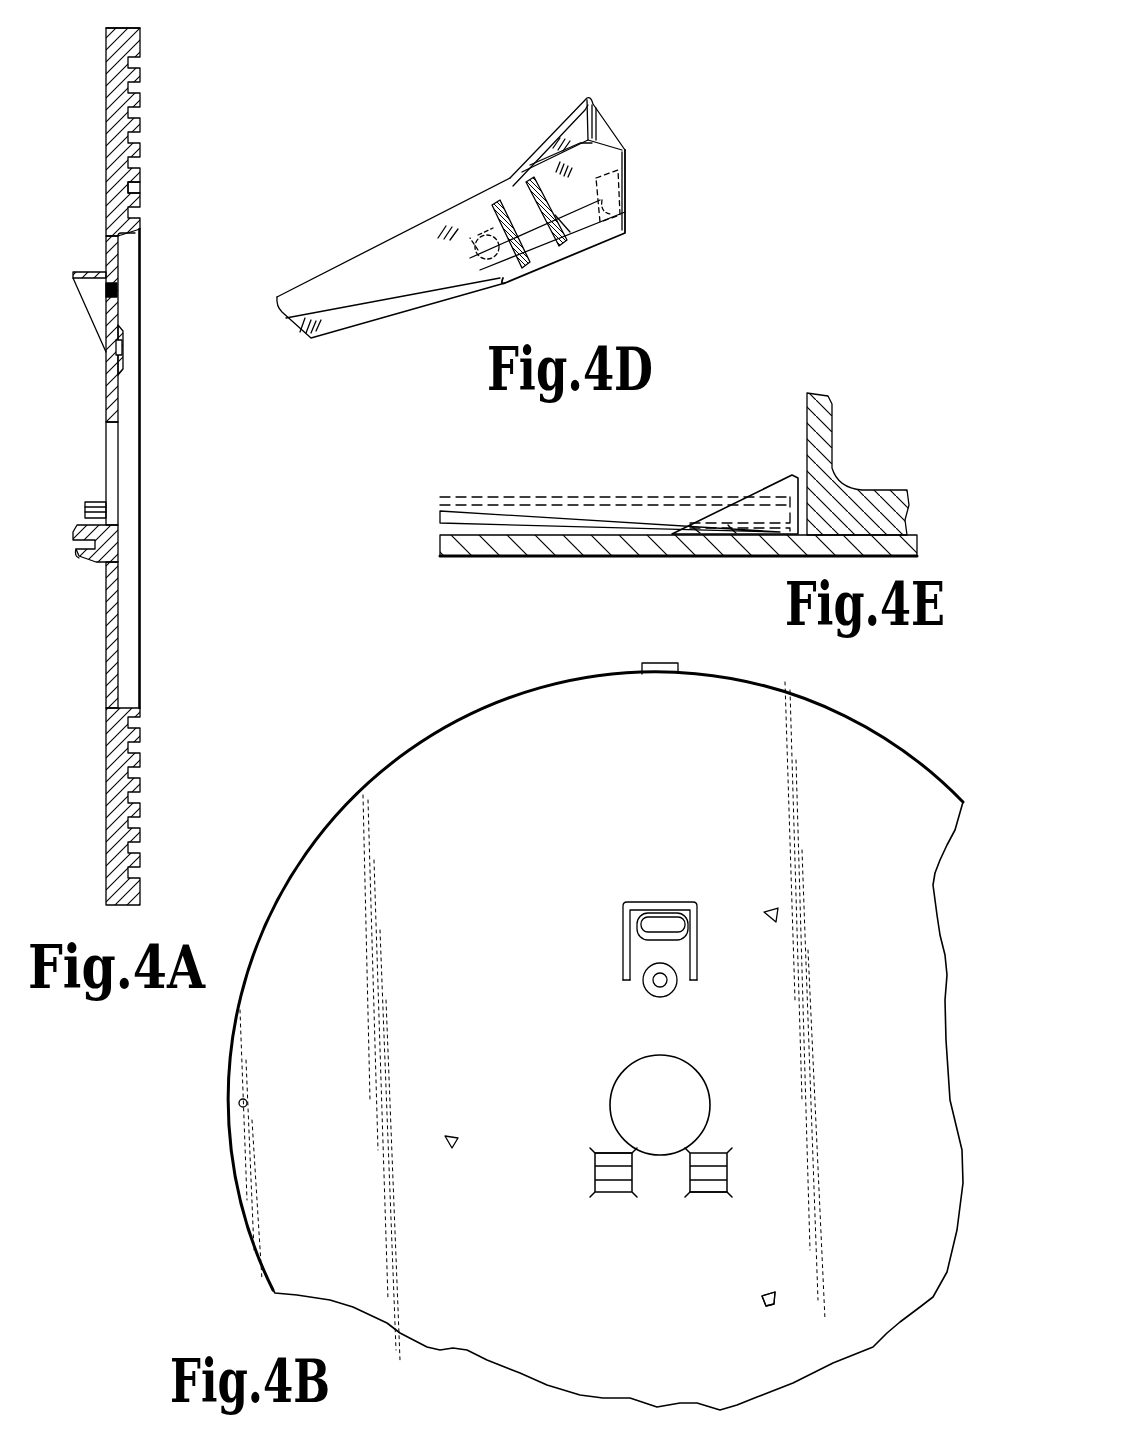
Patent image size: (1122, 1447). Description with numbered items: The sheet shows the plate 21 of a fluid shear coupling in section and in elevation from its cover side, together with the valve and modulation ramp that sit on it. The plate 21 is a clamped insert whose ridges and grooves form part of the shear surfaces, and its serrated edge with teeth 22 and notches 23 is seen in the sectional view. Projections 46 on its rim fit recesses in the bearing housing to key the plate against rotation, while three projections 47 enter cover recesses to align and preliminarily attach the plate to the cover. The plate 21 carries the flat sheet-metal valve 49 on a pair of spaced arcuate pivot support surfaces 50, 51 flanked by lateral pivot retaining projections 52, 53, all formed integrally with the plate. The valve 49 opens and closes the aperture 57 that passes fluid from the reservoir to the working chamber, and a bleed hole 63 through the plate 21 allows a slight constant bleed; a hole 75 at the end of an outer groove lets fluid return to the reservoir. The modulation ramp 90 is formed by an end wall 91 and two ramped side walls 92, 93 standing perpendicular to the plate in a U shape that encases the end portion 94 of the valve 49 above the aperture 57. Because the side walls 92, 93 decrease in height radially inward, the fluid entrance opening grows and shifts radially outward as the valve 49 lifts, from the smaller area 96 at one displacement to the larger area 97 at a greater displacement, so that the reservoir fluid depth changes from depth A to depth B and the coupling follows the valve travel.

In FIG. 4A, the plate 21 is at (177, 466).
In FIG. 4E, the plate 21 is at (678, 474).
In FIG. 4B, the plate 21 is at (832, 730).
In FIG. 4A, the serrated teeth 22 is at (141, 101).
In FIG. 4A, the tooth notch 23 is at (141, 193).
In FIG. 4A, the projections 46 is at (123, 15).
In FIG. 4B, the projections 46 is at (660, 672).
In FIG. 4A, the projections 47 is at (86, 507).
In FIG. 4B, the projections 47 is at (775, 1300).
In FIG. 4D, the valve 49 is at (322, 280).
In FIG. 4E, the valve 49 is at (540, 527).
In FIG. 4A, the arcuate pivot support surface 50 is at (120, 541).
In FIG. 4B, the arcuate pivot support surface 50 is at (605, 1175).
In FIG. 4B, the arcuate pivot support surface 51 is at (722, 1175).
In FIG. 4A, the lateral pivot retaining projection 52 is at (78, 558).
In FIG. 4B, the lateral pivot retaining projection 52 is at (629, 1160).
In FIG. 4B, the lateral pivot retaining projection 53 is at (718, 1160).
In FIG. 4D, the aperture 57 is at (624, 192).
In FIG. 4B, the aperture 57 is at (655, 922).
In FIG. 4A, the bleed hole 63 is at (123, 352).
In FIG. 4B, the bleed hole 63 is at (665, 985).
In FIG. 4B, the hole 75 is at (239, 1103).
In FIG. 4A, the modulation ramp 90 is at (64, 309).
In FIG. 4A, the end wall 91 is at (76, 274).
In FIG. 4D, the end wall 91 is at (612, 132).
In FIG. 4B, the end wall 91 is at (678, 902).
In FIG. 4A, the ramped side wall 92 is at (98, 334).
In FIG. 4D, the ramped side wall 92 is at (568, 123).
In FIG. 4B, the ramped side wall 92 is at (622, 958).
In FIG. 4D, the ramped side wall 93 is at (612, 237).
In FIG. 4E, the ramped side wall 93 is at (775, 515).
In FIG. 4B, the ramped side wall 93 is at (700, 967).
In FIG. 4D, the end portion 94 is at (563, 165).
In FIG. 4D, the fluid entrance orifice area 96 is at (510, 268).
In FIG. 4E, the fluid entrance orifice area 96 is at (698, 533).
In FIG. 4D, the fluid entrance orifice area 97 is at (560, 250).
In FIG. 4E, the fluid entrance orifice area 97 is at (735, 533).